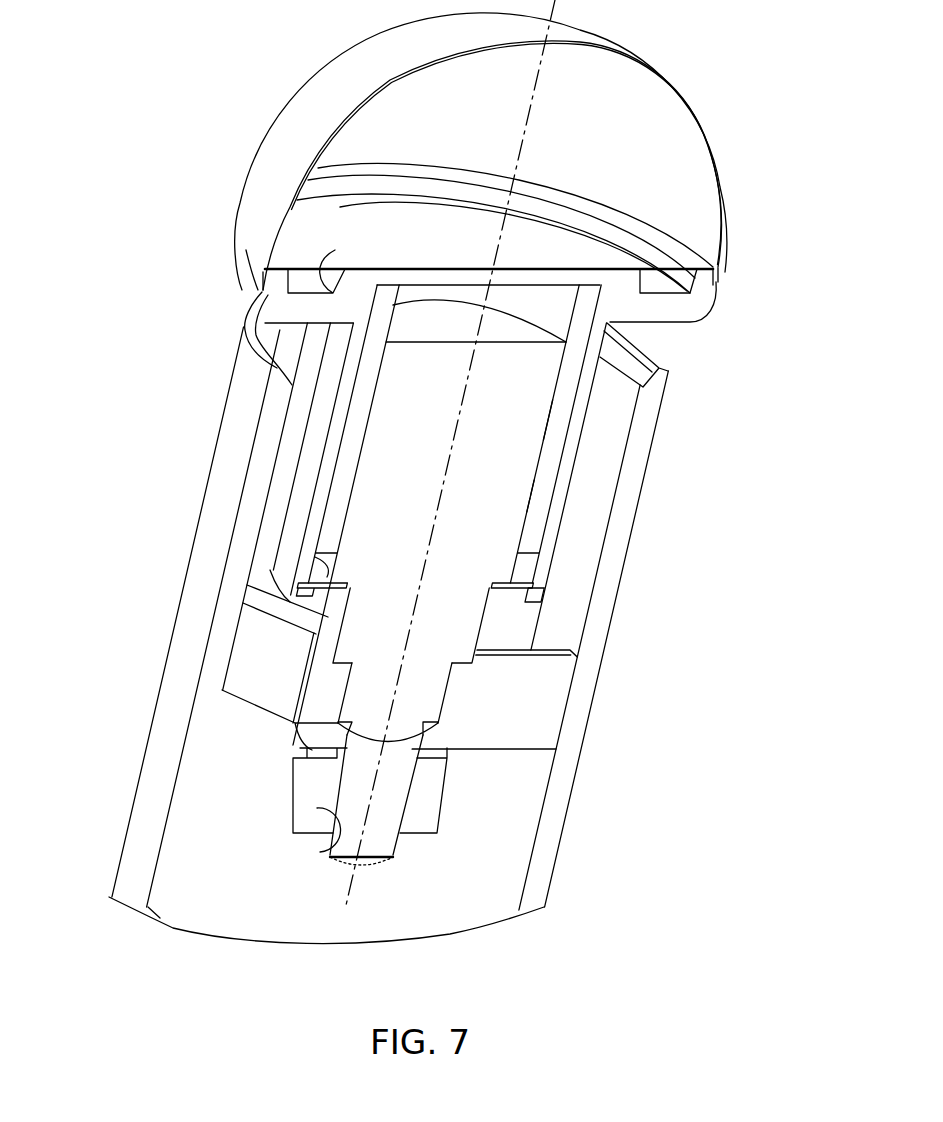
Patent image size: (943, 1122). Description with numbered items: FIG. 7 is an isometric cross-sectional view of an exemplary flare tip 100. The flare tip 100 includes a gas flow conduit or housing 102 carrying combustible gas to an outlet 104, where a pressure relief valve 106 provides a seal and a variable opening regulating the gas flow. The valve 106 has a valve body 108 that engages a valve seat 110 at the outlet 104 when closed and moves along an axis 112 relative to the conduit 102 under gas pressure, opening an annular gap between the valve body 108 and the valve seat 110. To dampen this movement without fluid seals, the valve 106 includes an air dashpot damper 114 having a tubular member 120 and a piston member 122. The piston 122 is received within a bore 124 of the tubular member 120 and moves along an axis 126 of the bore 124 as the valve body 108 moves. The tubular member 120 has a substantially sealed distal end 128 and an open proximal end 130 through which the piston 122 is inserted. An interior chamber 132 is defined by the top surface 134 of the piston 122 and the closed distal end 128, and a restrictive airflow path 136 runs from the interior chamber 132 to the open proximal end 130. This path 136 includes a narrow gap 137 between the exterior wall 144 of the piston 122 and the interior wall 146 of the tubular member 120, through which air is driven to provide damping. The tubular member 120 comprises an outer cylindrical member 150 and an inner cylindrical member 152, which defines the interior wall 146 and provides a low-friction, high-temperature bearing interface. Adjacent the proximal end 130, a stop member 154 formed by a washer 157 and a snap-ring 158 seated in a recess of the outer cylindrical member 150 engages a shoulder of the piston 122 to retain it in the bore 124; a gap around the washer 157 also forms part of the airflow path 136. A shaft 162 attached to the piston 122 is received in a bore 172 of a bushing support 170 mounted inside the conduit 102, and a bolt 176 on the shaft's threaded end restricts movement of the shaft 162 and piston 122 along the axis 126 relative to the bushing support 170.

The flare tip 100 is at (158, 30).
The gas flow conduit 102 is at (150, 802).
The outlet 104 is at (622, 356).
The pressure relief valve 106 is at (768, 207).
The valve body 108 is at (703, 127).
The valve seat 110 is at (247, 320).
The axis 112 is at (410, 630).
The air dashpot damper 114 is at (606, 420).
The tubular member 120 is at (318, 407).
The piston member 122 is at (378, 436).
The bore 124 is at (522, 301).
The axis 126 is at (447, 474).
The distal end 128 is at (377, 315).
The proximal end 130 is at (545, 576).
The interior chamber 132 is at (548, 302).
The top surface 134 is at (434, 333).
The restrictive airflow path 136 is at (542, 450).
The gap 137 is at (547, 422).
The exterior wall 144 is at (538, 487).
The interior wall 146 is at (527, 503).
The outer cylindrical member 150 is at (297, 512).
The inner cylindrical member 152 is at (343, 475).
The stop member 154 is at (520, 613).
The washer 157 is at (497, 583).
The snap-ring 158 is at (542, 600).
The shaft 162 is at (420, 697).
The bushing support 170 is at (248, 652).
The bore 172 is at (324, 848).
The bolt 176 is at (313, 797).